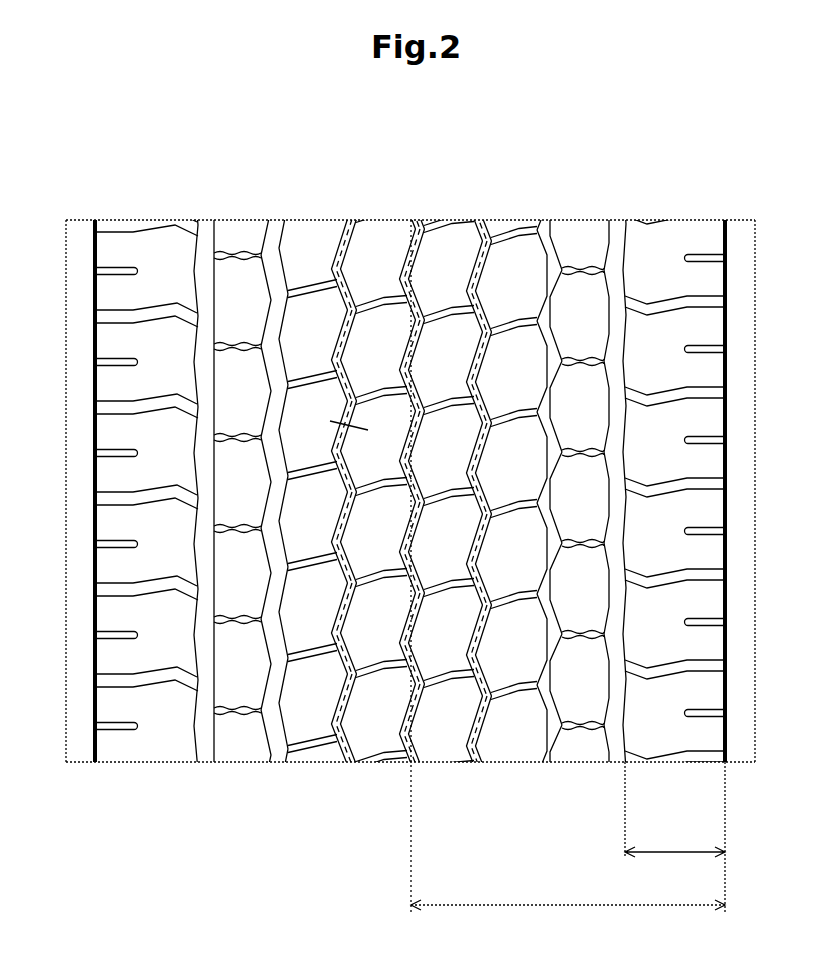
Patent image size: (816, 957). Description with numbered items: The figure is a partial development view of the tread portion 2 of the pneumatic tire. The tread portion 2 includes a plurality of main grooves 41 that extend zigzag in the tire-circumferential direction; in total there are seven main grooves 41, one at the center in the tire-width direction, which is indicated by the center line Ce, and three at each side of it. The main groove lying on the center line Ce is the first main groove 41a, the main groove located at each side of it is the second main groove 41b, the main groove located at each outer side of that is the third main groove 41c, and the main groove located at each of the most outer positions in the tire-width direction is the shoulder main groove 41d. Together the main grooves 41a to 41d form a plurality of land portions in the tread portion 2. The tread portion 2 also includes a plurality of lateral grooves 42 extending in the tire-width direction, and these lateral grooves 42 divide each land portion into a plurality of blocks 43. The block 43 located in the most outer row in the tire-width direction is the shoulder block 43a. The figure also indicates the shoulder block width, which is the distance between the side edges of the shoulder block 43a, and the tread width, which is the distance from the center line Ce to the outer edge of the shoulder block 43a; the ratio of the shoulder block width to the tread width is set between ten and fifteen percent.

The tread portion 2 is at (296, 203).
The main grooves 41 is at (632, 145).
The first main groove 41a is at (418, 220).
The second main groove 41b is at (481, 220).
The third main groove 41c is at (541, 220).
The shoulder main groove 41d is at (615, 220).
The lateral grooves 42 is at (235, 218).
The block 43 is at (327, 218).
The shoulder block 43a is at (670, 228).
The center line Ce is at (411, 220).